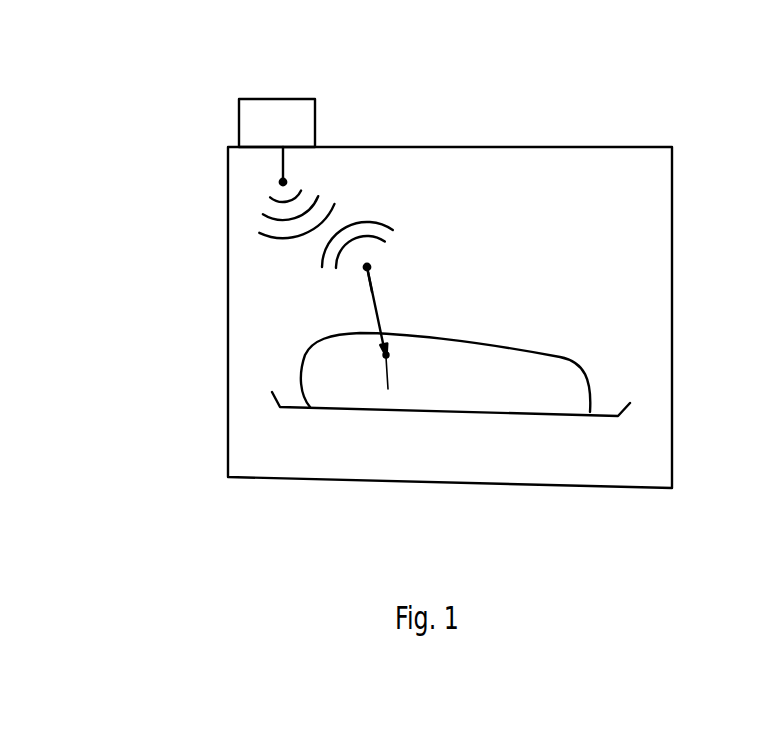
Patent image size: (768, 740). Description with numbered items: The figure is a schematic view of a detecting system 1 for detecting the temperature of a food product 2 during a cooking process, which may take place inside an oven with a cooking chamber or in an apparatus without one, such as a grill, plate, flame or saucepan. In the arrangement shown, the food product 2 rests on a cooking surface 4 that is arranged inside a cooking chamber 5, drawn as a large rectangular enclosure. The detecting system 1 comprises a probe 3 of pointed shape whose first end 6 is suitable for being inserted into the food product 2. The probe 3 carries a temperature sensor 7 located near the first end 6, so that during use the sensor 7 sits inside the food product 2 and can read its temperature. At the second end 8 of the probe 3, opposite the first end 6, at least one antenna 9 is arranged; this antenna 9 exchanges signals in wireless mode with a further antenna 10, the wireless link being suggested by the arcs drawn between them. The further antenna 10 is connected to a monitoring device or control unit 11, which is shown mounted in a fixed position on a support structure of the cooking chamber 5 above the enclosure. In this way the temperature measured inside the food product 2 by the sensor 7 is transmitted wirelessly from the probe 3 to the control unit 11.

The detecting system 1 is at (186, 290).
The food product 2 is at (500, 370).
The probe 3 is at (382, 315).
The cooking surface 4 is at (600, 413).
The cooking chamber 5 is at (673, 236).
The first end 6 is at (387, 378).
The temperature sensor 7 is at (393, 358).
The second end 8 is at (368, 283).
The antenna 9 is at (367, 267).
The further antenna 10 is at (273, 168).
The control unit 11 is at (270, 117).